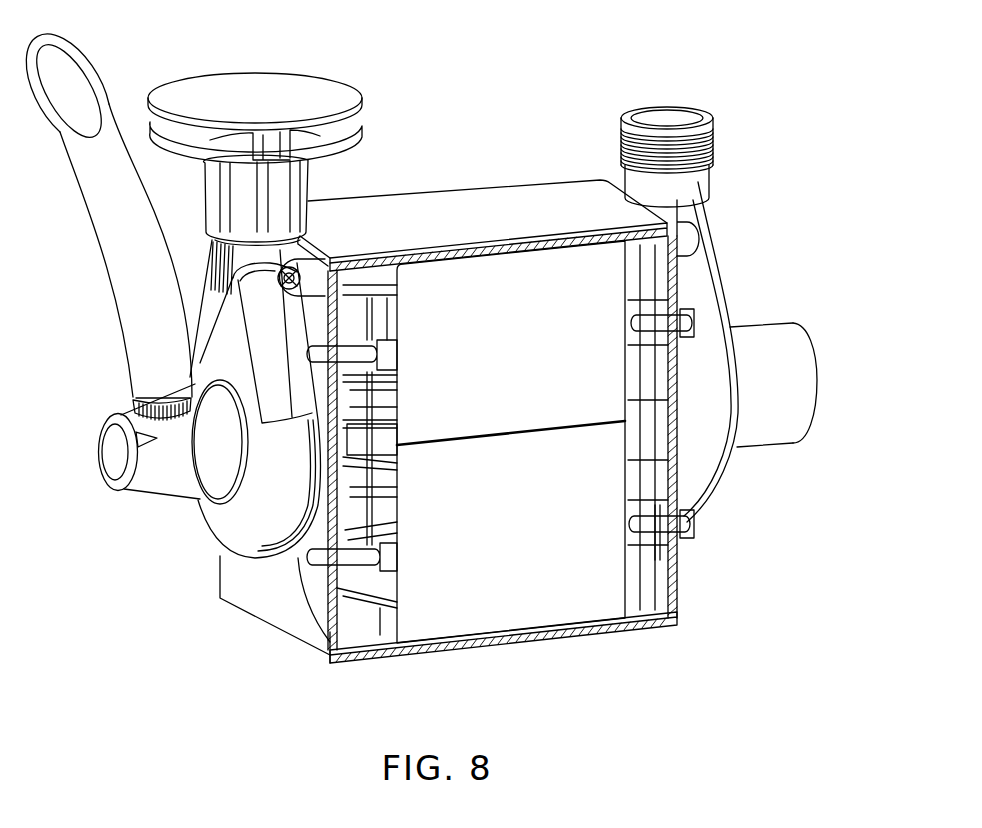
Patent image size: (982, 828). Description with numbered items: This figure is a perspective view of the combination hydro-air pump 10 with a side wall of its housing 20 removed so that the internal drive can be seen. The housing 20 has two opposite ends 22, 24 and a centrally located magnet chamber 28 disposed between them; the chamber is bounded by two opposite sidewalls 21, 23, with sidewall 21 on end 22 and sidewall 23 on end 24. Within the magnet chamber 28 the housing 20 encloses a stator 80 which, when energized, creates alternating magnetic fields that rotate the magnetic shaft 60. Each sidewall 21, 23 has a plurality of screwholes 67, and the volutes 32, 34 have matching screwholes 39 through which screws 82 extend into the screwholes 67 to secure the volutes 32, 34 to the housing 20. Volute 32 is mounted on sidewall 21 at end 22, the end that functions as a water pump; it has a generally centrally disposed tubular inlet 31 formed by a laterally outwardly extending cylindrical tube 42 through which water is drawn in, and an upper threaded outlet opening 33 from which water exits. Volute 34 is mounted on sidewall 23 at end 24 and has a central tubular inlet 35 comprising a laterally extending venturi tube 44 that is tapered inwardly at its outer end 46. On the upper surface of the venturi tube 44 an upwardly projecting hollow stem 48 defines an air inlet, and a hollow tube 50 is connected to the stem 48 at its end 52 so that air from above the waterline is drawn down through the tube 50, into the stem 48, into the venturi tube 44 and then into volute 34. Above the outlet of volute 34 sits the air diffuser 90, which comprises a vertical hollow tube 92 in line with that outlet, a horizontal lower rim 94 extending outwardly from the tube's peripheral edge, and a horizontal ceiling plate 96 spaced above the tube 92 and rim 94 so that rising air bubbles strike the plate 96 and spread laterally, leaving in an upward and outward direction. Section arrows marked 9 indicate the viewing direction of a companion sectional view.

The pump 10 is at (472, 163).
The housing 20 is at (623, 636).
The sidewall 21 is at (677, 597).
The sidewall 23 is at (330, 640).
The magnet chamber 28 is at (362, 268).
The stator 80 is at (495, 356).
The shaft 60 is at (353, 452).
The screwholes 67 is at (370, 545).
The screwholes 39 is at (312, 575).
The screws 82 is at (296, 268).
The hollow tube 92 is at (282, 177).
The lower rim 94 is at (348, 130).
The ceiling plate 96 is at (323, 92).
The air diffuser 90 is at (171, 73).
The hollow tube 50 is at (115, 218).
The end 52 is at (157, 400).
The hollow stem 48 is at (134, 404).
The tubular inlet 35 is at (110, 443).
The outer end 46 is at (128, 492).
The venturi tube 44 is at (184, 482).
The end 24 is at (105, 506).
The volute 34 is at (215, 550).
The section view direction 9 is at (820, 375).
The outlet opening 33 is at (663, 106).
The end 22 is at (806, 258).
The volute 32 is at (733, 493).
The tubular inlet 31 is at (814, 365).
The cylindrical tube 42 is at (770, 345).